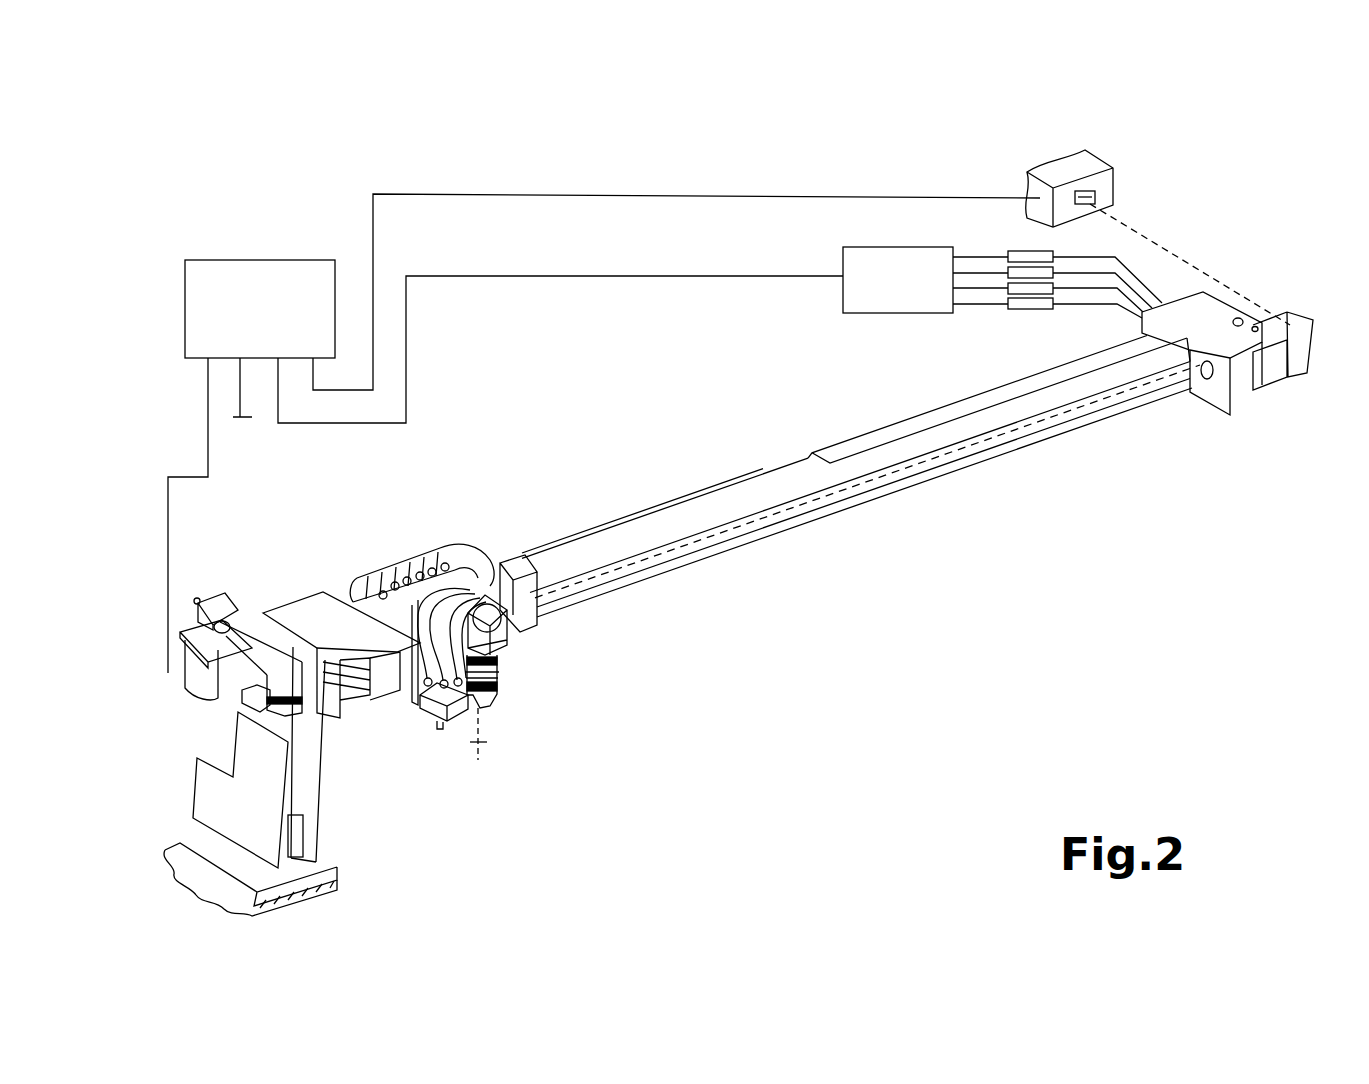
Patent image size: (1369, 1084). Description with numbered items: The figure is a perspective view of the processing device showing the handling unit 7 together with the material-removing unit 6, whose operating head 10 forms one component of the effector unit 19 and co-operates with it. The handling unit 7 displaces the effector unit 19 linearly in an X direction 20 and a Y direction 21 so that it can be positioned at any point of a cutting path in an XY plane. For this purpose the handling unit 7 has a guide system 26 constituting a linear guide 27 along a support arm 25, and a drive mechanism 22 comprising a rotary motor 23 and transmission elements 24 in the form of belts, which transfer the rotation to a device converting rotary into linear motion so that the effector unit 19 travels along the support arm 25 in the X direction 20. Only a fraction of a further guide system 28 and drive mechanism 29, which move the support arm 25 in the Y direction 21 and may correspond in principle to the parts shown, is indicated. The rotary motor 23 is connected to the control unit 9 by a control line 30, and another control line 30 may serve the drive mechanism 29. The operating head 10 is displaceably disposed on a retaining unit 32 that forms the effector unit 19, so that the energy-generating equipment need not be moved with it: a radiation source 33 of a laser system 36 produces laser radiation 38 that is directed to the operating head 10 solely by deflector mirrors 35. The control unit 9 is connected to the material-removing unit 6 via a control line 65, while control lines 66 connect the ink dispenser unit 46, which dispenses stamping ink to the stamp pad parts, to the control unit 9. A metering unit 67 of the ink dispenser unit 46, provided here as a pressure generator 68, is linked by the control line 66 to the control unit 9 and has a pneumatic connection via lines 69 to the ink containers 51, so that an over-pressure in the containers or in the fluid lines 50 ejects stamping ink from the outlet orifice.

The material-removing unit 6 is at (660, 690).
The handling unit 7 is at (1018, 598).
The control unit 9 is at (200, 232).
The operating head 10 is at (525, 695).
The effector unit 19 is at (540, 745).
The X direction 20 is at (372, 540).
The Y direction 21 is at (202, 842).
The drive mechanism 22 is at (152, 650).
The rotary motor 23 is at (197, 668).
The transmission elements 24 is at (255, 660).
The support arm 25 is at (795, 473).
The guide system 26 is at (637, 542).
The linear guide 27 is at (688, 545).
The guide system 28 is at (375, 878).
The drive mechanism 29 is at (372, 893).
The control line 30 is at (202, 378).
The retaining unit 32 is at (524, 560).
The radiation source 33 is at (1135, 180).
The deflector mirrors 35 is at (1292, 372).
The laser system 36 is at (1127, 553).
The laser radiation 38 is at (760, 527).
The ink dispenser unit 46 is at (420, 722).
The fluid lines 50 is at (1138, 278).
The ink containers 51 is at (1010, 318).
The control line 65 is at (582, 195).
The control lines 66 is at (580, 276).
The metering unit 67 is at (815, 322).
The pressure generator 68 is at (843, 262).
The lines 69 is at (1000, 256).